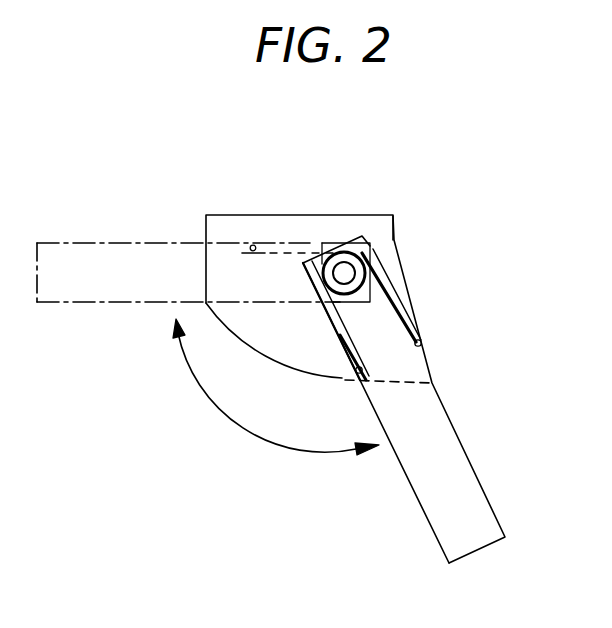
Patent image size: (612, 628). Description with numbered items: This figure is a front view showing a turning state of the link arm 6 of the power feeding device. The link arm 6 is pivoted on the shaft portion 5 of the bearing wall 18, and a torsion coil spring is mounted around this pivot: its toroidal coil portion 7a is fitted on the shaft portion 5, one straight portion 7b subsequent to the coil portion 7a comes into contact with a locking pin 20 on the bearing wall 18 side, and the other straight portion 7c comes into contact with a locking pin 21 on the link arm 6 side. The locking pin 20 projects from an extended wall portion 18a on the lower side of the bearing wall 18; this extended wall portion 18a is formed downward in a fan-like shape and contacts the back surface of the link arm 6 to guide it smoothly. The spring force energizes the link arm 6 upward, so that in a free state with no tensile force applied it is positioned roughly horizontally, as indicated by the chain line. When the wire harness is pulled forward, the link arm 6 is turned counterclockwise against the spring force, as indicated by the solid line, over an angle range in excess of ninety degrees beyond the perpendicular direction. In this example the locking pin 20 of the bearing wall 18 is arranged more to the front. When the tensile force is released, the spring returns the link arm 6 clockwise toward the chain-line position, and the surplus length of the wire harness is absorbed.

The shaft portion 5 is at (347, 271).
The link arm 6 is at (97, 242).
The coil portion 7a is at (312, 261).
The straight portion 7b is at (403, 318).
The straight portion 7c is at (343, 333).
The bearing wall 18 is at (367, 233).
The extended wall portion 18a is at (301, 372).
The locking pin 20 is at (422, 342).
The locking pin 21 is at (357, 373).